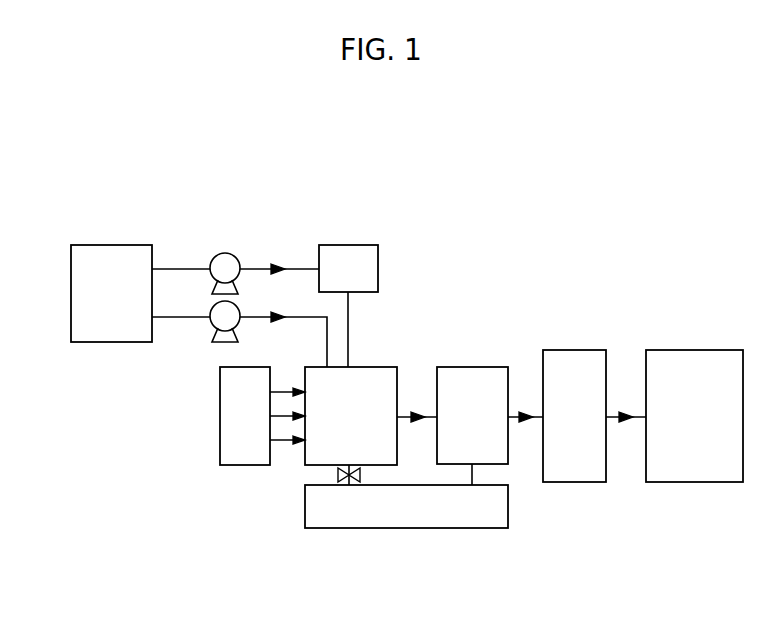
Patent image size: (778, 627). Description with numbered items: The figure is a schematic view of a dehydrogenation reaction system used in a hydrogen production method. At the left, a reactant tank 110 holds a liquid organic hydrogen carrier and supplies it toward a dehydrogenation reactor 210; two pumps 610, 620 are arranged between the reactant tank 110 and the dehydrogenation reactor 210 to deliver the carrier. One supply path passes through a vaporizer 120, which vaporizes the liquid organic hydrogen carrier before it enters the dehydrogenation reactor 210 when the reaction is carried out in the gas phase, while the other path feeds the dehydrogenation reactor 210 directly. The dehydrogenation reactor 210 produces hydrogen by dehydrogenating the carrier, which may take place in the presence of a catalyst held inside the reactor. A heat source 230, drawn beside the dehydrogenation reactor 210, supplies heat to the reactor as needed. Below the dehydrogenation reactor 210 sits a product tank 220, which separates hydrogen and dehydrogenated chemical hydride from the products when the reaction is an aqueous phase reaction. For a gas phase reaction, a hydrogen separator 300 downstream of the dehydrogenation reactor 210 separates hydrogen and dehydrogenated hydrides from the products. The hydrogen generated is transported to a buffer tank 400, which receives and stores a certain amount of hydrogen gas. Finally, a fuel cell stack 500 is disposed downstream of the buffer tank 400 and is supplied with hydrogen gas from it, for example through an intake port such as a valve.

The reactant tank 110 is at (71, 296).
The vaporizer 120 is at (348, 245).
The dehydrogenation reactor 210 is at (375, 367).
The product tank 220 is at (407, 528).
The heat source 230 is at (220, 414).
The hydrogen separator 300 is at (470, 367).
The buffer tank 400 is at (573, 350).
The fuel cell stack 500 is at (693, 350).
The pump 610 is at (225, 253).
The pump 620 is at (213, 326).